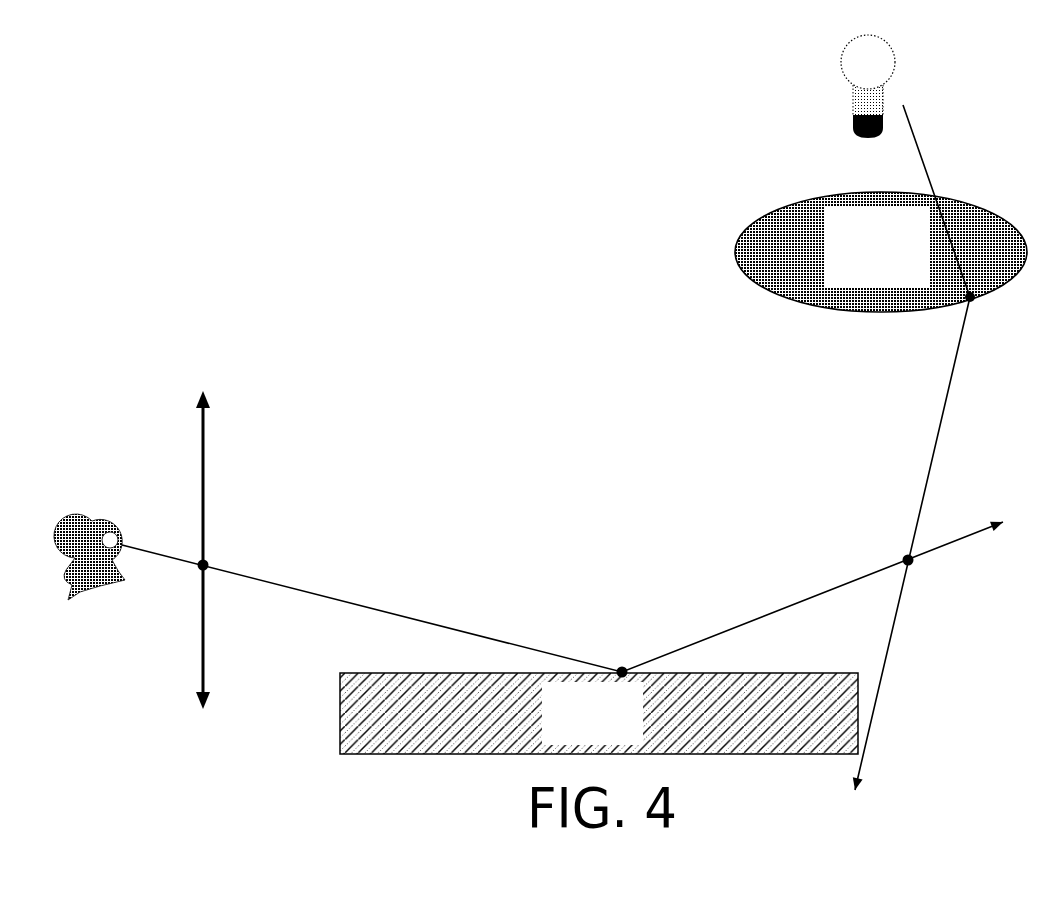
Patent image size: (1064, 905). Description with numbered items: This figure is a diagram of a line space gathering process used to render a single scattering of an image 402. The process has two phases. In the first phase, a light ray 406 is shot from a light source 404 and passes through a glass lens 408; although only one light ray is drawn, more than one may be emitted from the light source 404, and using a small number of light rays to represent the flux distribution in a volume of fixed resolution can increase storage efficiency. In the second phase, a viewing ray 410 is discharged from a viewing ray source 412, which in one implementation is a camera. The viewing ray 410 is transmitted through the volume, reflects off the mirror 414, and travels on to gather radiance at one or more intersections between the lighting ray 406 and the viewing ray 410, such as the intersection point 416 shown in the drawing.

The image 402 is at (207, 462).
The light source 404 is at (897, 78).
The light ray 406 is at (951, 383).
The glass lens 408 is at (881, 252).
The viewing ray 410 is at (405, 613).
The viewing ray source 412 is at (80, 597).
The mirror 414 is at (599, 713).
The intersection point 416 is at (904, 556).